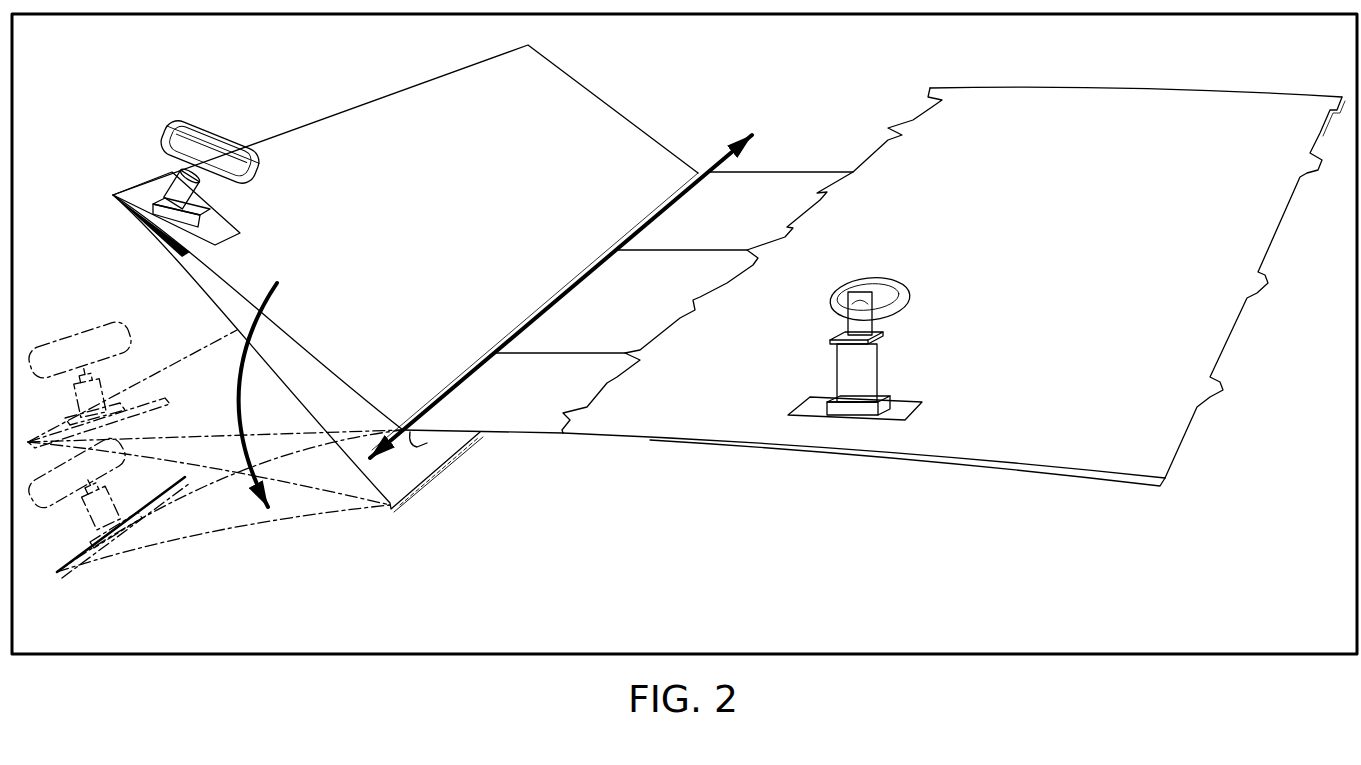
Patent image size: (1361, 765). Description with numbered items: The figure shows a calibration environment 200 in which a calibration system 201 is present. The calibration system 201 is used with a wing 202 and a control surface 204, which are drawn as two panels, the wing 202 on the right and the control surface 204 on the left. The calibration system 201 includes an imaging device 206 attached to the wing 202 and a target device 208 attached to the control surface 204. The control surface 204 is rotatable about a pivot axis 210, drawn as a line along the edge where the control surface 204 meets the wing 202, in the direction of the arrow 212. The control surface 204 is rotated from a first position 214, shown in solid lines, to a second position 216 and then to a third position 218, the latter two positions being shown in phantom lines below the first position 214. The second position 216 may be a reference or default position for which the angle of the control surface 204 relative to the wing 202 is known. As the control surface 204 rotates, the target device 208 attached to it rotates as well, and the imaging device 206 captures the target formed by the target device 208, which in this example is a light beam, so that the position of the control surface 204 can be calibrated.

The calibration environment 200 is at (705, 558).
The calibration system 201 is at (902, 357).
The wing 202 is at (1082, 92).
The control surface 204 is at (387, 107).
The imaging device 206 is at (868, 278).
The target device 208 is at (182, 117).
The pivot axis 210 is at (718, 157).
The arrow 212 is at (280, 292).
The first position 214 is at (132, 228).
The second position 216 is at (192, 340).
The third position 218 is at (122, 572).